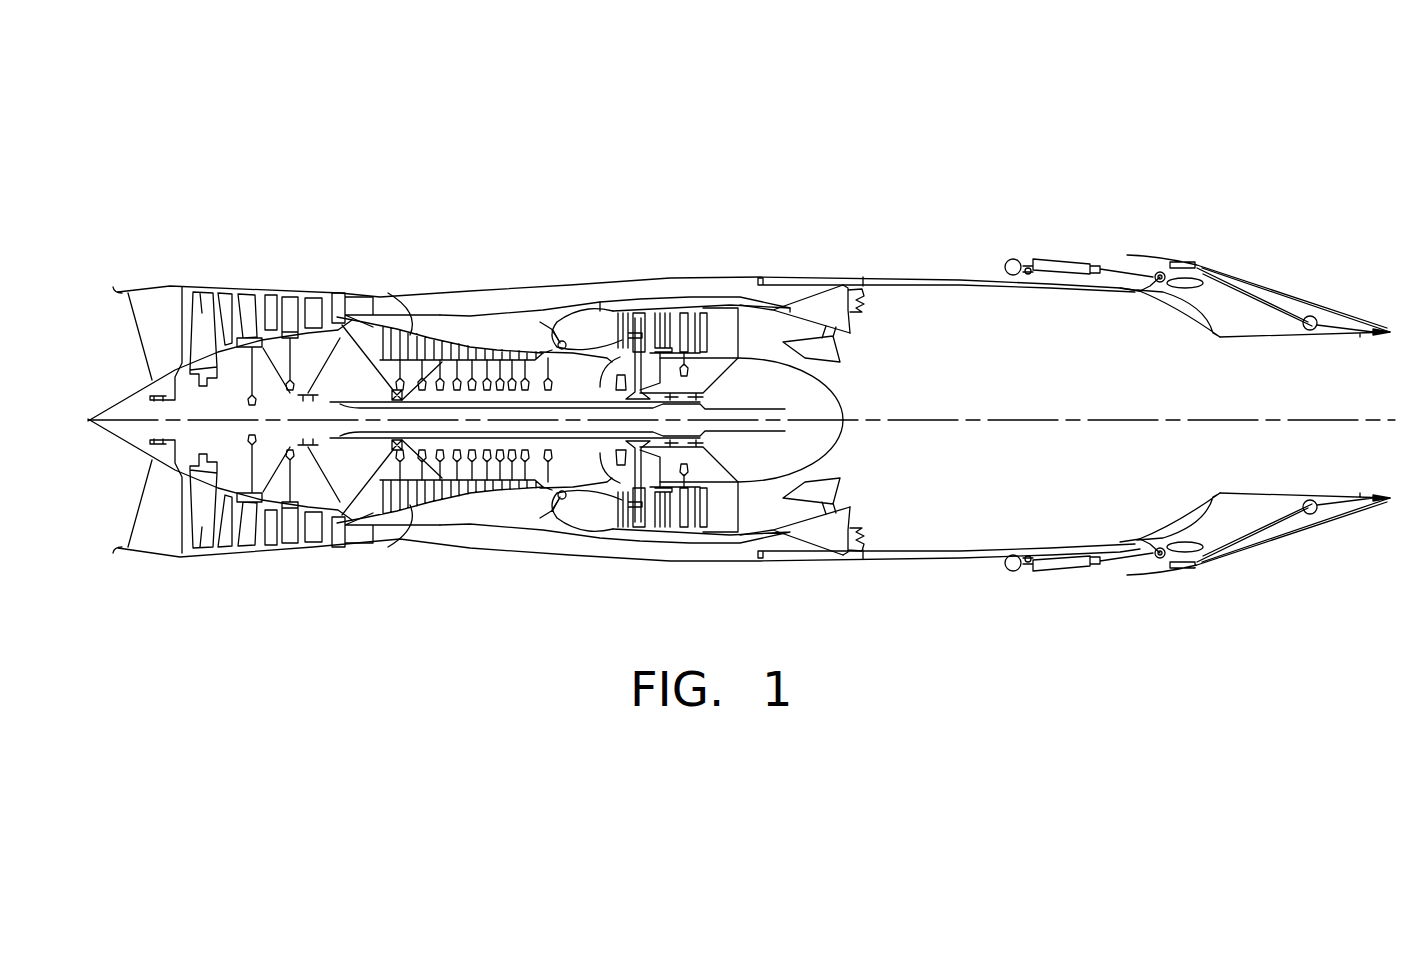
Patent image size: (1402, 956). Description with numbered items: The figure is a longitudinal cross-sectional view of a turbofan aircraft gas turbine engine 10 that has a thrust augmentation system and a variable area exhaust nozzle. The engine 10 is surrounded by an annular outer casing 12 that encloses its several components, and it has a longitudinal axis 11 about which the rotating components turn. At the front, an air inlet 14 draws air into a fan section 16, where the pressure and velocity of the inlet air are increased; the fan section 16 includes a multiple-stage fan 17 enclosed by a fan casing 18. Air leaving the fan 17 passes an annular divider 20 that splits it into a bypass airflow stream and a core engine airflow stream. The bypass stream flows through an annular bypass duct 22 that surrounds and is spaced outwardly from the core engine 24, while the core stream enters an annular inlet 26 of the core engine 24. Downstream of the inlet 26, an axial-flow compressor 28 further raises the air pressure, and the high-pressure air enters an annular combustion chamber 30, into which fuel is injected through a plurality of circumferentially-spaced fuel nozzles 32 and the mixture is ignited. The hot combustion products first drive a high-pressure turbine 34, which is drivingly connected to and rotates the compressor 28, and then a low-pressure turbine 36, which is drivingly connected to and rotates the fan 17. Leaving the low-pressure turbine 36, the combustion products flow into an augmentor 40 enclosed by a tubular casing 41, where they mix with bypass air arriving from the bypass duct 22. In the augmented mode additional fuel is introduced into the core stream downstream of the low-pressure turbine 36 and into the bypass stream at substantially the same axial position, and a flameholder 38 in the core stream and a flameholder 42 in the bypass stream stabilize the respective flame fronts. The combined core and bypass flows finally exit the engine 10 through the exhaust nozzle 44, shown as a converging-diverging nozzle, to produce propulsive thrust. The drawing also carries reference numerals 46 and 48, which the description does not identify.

The aircraft gas turbine engine 10 is at (232, 112).
The longitudinal axis 11 is at (1200, 415).
The outer casing 12 is at (470, 296).
The air inlet 14 is at (113, 327).
The fan section 16 is at (212, 237).
The fan 17 is at (203, 300).
The fan casing 18 is at (282, 298).
The annular divider 20 is at (350, 300).
The bypass duct 22 is at (440, 300).
The core engine 24 is at (527, 578).
The annular inlet 26 is at (372, 340).
The axial-flow compressor 28 is at (458, 368).
The combustion chamber 30 is at (581, 333).
The fuel nozzles 32 is at (557, 322).
The high-pressure turbine 34 is at (610, 366).
The low-pressure turbine 36 is at (668, 312).
The flameholder 38 is at (841, 353).
The augmentor 40 is at (1032, 369).
The tubular casing 41 is at (895, 278).
The flameholder 42 is at (868, 307).
The exhaust nozzle 44 is at (1206, 337).
The turbine casing 46 is at (621, 282).
The fan frame 48 is at (412, 325).